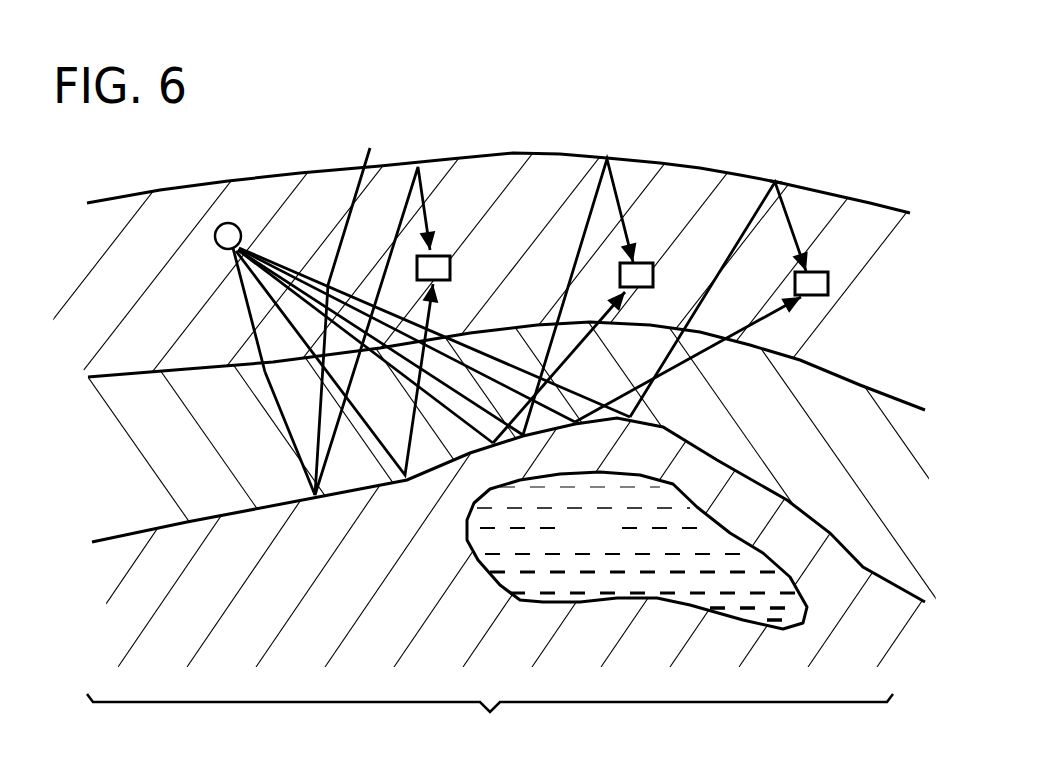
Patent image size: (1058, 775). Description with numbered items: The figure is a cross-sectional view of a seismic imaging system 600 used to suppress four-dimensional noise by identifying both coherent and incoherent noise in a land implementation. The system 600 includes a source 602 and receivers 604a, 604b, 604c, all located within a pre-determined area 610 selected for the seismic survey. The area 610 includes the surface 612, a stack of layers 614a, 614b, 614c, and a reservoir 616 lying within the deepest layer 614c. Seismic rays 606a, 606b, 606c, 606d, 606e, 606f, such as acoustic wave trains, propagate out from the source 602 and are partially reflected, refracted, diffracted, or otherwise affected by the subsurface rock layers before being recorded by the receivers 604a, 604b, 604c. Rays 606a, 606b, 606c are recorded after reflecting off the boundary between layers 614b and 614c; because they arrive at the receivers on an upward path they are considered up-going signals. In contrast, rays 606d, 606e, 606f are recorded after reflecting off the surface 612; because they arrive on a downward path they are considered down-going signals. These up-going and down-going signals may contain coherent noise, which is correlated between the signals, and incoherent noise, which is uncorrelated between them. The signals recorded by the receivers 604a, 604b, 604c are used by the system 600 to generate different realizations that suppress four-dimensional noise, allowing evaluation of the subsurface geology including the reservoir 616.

The seismic imaging system 600 is at (529, 368).
The source 602 is at (228, 222).
The receiver 604a is at (486, 258).
The receiver 604b is at (689, 262).
The receiver 604c is at (829, 283).
The seismic ray 606a is at (244, 299).
The seismic ray 606b is at (270, 262).
The seismic ray 606c is at (375, 307).
The seismic ray 606d is at (281, 413).
The seismic ray 606e is at (620, 176).
The seismic ray 606f is at (794, 216).
The area 610 is at (490, 720).
The surface 612 is at (778, 182).
The layer 614a is at (897, 262).
The layer 614b is at (918, 489).
The layer 614c is at (917, 657).
The reservoir 616 is at (613, 543).